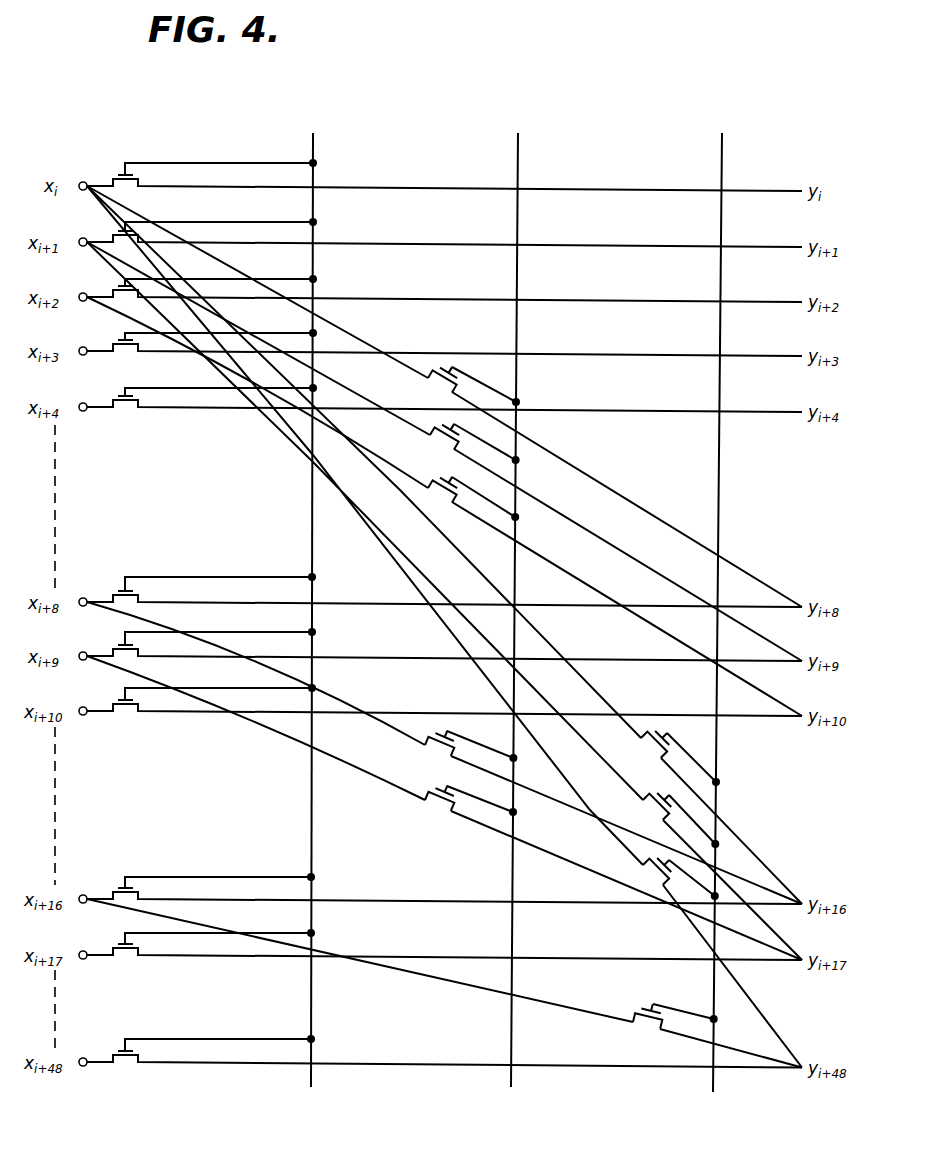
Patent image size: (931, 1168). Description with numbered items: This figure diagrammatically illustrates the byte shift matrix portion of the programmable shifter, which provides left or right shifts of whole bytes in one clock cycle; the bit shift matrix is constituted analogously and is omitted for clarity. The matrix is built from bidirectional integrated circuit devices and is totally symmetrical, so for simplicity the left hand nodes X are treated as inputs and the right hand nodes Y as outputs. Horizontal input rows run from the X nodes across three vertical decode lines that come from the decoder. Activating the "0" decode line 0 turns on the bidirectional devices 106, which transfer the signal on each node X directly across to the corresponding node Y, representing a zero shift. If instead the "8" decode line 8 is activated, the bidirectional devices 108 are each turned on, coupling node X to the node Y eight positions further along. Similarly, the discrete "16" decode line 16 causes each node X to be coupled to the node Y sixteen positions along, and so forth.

The bidirectional devices 106 is at (424, 606).
The bidirectional devices 108 is at (444, 573).
The "0" decode line 0 is at (312, 600).
The "8" decode line 8 is at (518, 600).
The "16" decode line 16 is at (719, 603).